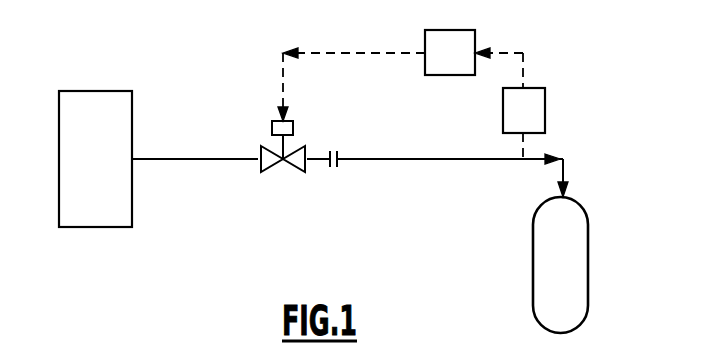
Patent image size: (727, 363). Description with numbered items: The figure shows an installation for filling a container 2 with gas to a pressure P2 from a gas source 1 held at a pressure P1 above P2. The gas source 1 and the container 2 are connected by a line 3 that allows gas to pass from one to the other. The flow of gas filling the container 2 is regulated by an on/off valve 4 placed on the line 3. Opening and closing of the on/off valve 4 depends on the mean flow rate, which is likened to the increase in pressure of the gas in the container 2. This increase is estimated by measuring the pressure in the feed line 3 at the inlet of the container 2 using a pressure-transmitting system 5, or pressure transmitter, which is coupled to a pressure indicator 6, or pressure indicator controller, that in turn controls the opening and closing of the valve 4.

The gas source 1 is at (59, 134).
The container 2 is at (588, 257).
The line 3 is at (199, 157).
The on/off valve 4 is at (298, 172).
The pressure-transmitting system 5 is at (545, 103).
The pressure indicator 6 is at (452, 76).